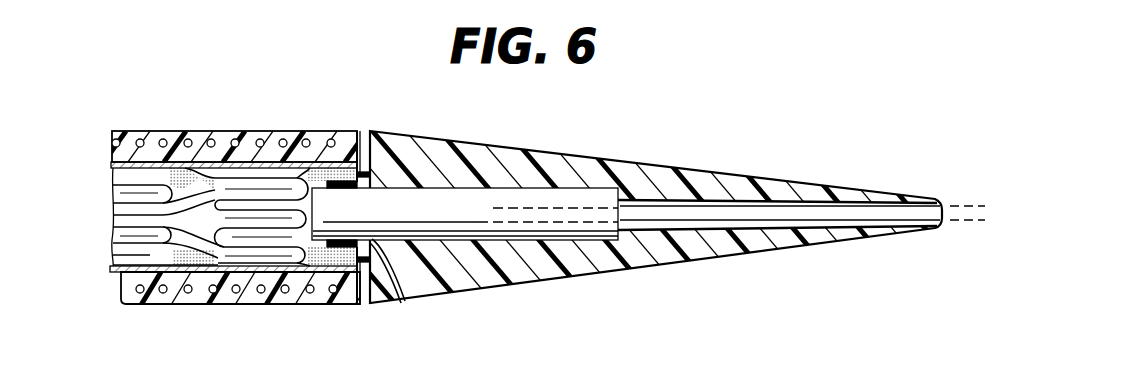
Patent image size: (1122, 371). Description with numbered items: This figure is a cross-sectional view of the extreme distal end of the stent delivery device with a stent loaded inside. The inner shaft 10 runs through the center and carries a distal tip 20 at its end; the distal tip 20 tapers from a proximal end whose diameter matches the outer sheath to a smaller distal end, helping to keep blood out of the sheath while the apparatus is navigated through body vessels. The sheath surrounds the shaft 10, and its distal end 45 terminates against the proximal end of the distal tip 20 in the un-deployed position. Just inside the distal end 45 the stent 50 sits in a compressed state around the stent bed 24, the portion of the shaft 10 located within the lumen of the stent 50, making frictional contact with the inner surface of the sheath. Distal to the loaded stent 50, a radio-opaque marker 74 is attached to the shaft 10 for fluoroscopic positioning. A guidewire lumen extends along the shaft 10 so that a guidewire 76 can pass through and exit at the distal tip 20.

The shaft 10 is at (497, 187).
The distal tip 20 is at (633, 162).
The stent bed 24 is at (193, 175).
The distal end of sheath 45 is at (164, 304).
The stent 50 is at (223, 258).
The radio-opaque marker 74 is at (403, 303).
The guidewire 76 is at (951, 200).